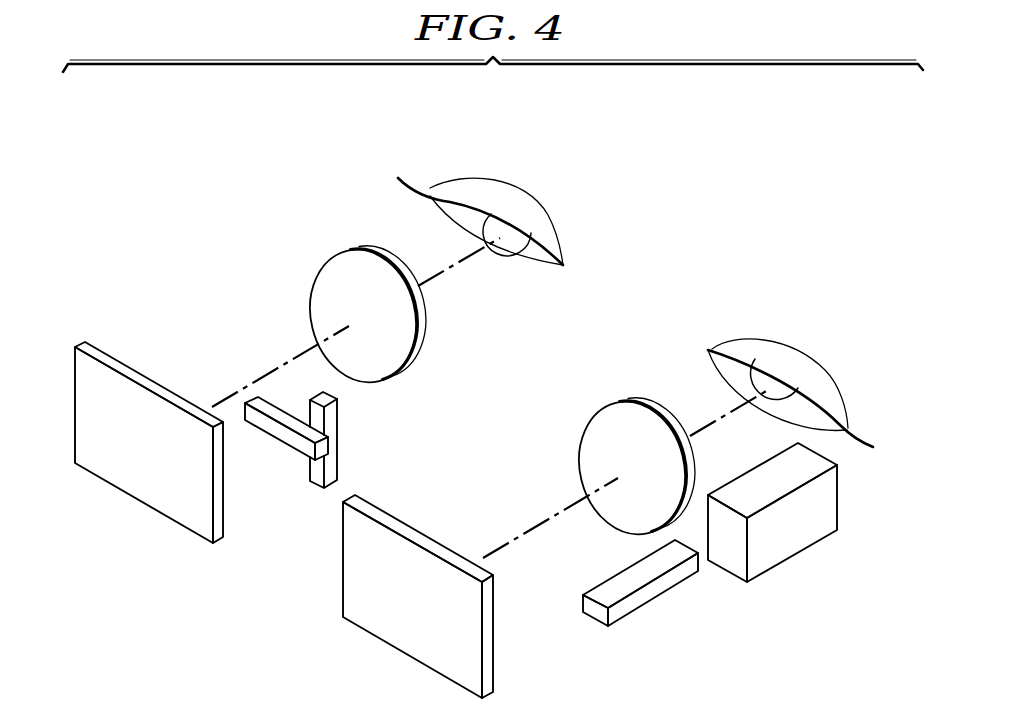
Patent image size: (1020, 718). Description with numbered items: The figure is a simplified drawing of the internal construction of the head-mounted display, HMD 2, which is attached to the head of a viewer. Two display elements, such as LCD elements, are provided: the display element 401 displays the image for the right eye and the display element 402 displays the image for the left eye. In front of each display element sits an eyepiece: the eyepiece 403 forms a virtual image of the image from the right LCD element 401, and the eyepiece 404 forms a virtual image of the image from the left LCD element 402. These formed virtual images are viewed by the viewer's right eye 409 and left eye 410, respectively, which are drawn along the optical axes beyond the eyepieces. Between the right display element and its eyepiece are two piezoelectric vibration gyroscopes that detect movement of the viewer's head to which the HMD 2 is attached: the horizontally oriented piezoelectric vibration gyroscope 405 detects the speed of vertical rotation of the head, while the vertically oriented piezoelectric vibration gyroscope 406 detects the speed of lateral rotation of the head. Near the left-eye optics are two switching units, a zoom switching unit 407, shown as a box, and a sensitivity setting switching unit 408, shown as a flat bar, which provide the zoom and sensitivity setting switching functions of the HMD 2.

The HMD 2 is at (178, 248).
The display element 401 is at (127, 482).
The display element 402 is at (395, 635).
The eyepiece 403 is at (323, 287).
The eyepiece 404 is at (592, 440).
The horizontally oriented piezoelectric vibration gyroscope 405 is at (300, 447).
The vertically oriented piezoelectric vibration gyroscope 406 is at (335, 420).
The zoom switching unit 407 is at (807, 538).
The sensitivity setting switching unit 408 is at (655, 592).
The right eye 409 is at (487, 192).
The left eye 410 is at (818, 377).